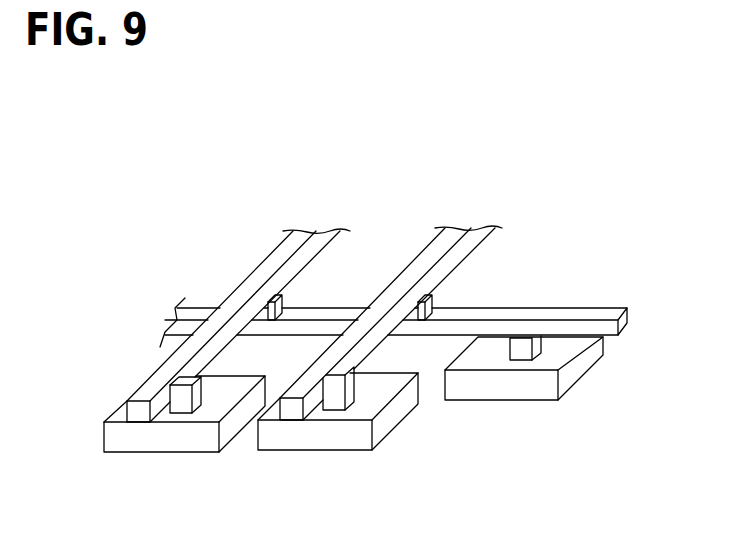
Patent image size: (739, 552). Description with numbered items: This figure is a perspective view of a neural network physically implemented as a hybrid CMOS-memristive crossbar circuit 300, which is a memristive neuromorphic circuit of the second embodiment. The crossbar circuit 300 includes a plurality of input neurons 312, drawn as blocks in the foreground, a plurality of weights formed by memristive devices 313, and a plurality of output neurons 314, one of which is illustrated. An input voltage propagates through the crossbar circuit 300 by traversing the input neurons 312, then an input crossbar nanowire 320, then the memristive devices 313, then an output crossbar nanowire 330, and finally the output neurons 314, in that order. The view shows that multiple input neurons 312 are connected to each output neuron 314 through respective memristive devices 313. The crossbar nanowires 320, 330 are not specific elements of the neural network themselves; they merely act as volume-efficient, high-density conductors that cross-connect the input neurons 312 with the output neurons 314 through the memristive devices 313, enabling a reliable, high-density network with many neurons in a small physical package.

The hybrid CMOS-memristive crossbar circuit 300 is at (572, 135).
The input neurons 312 is at (167, 453).
The memristive devices 313 is at (284, 296).
The output neurons 314 is at (583, 377).
The input crossbar nanowire 320 is at (266, 258).
The output crossbar nanowire 330 is at (626, 307).